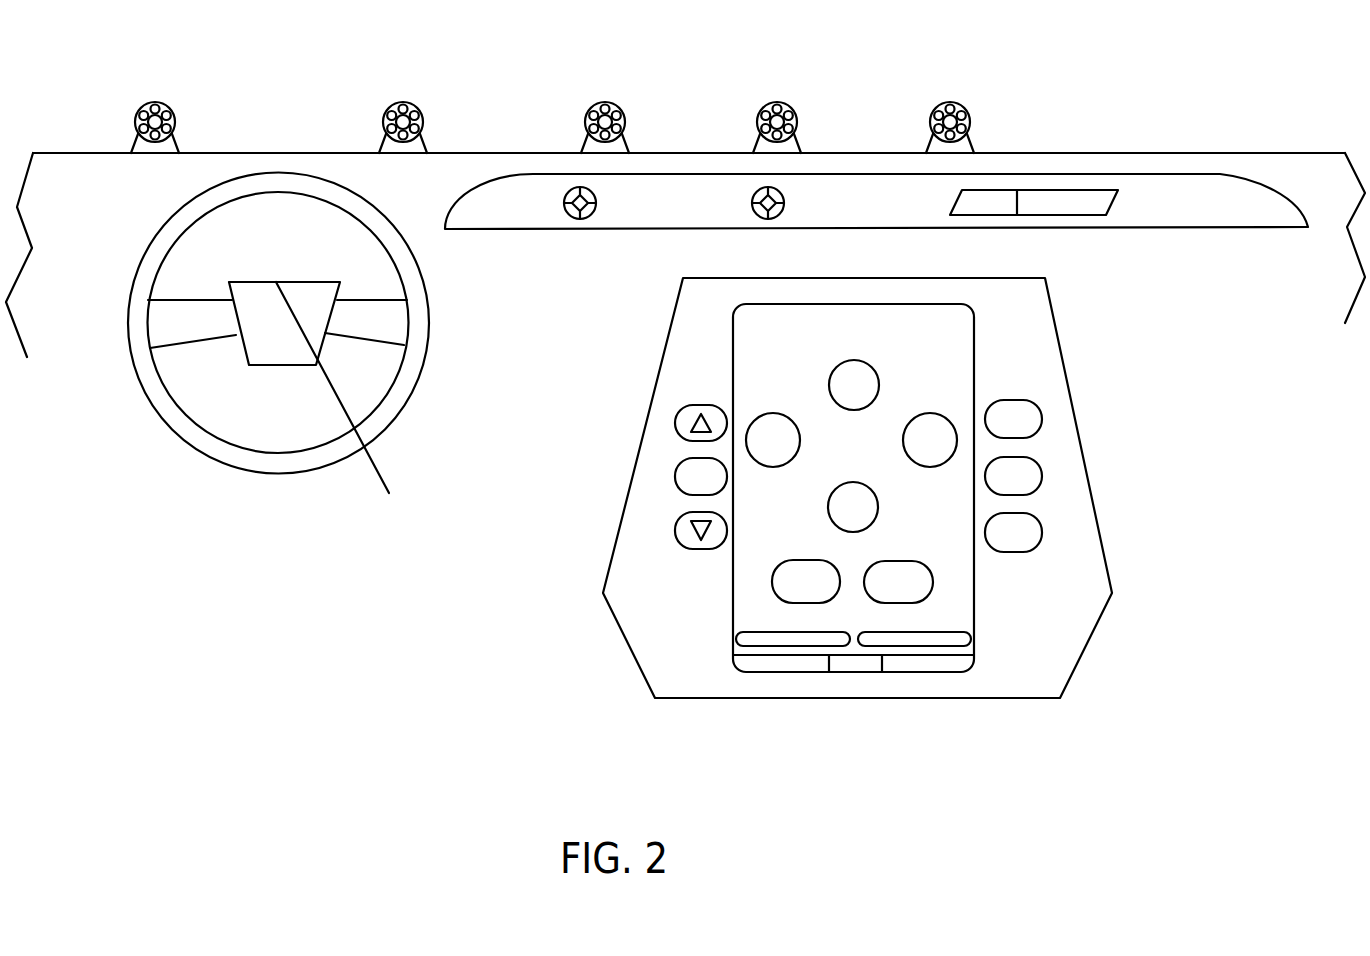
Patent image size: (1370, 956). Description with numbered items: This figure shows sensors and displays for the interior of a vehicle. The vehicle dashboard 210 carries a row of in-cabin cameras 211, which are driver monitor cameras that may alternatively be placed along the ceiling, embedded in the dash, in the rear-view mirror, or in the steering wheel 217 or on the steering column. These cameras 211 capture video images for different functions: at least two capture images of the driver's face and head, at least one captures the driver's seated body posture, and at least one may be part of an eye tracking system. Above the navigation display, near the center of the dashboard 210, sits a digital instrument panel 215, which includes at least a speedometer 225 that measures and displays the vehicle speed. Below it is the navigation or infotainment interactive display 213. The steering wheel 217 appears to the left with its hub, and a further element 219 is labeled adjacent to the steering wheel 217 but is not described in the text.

The vehicle dashboard 210 is at (89, 212).
The in-cabin cameras 211 is at (173, 112).
The interactive display 213 is at (1049, 381).
The instrument panel 215 is at (876, 192).
The steering wheel 217 is at (240, 357).
The steering wheel hub indicator 219 is at (352, 411).
The speedometer 225 is at (766, 219).